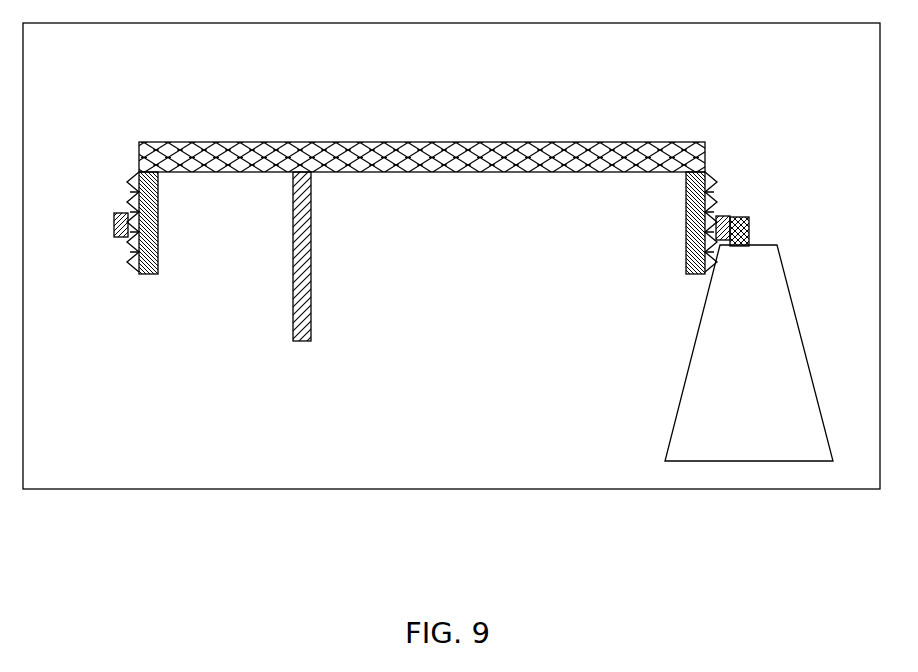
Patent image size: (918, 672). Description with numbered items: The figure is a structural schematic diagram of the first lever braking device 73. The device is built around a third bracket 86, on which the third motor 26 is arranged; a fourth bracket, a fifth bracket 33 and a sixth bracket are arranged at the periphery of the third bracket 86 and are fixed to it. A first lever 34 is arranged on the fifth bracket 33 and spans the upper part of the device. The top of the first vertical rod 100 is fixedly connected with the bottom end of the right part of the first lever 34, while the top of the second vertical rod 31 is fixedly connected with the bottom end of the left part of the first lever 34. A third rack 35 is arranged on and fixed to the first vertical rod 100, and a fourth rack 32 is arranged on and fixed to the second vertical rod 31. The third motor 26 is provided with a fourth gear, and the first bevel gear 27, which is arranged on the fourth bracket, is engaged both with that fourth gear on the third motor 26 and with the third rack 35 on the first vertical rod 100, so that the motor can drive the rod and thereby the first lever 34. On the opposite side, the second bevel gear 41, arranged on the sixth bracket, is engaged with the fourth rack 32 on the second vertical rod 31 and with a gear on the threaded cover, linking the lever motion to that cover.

The first lever braking device 73 is at (492, 490).
The first lever 34 is at (588, 142).
The second vertical rod 31 is at (139, 275).
The fourth rack 32 is at (127, 196).
The second bevel gear 41 is at (116, 238).
The fifth bracket 33 is at (293, 342).
The first vertical rod 100 is at (686, 275).
The third rack 35 is at (717, 195).
The first bevel gear 27 is at (726, 216).
The third motor 26 is at (750, 229).
The third bracket 86 is at (665, 461).